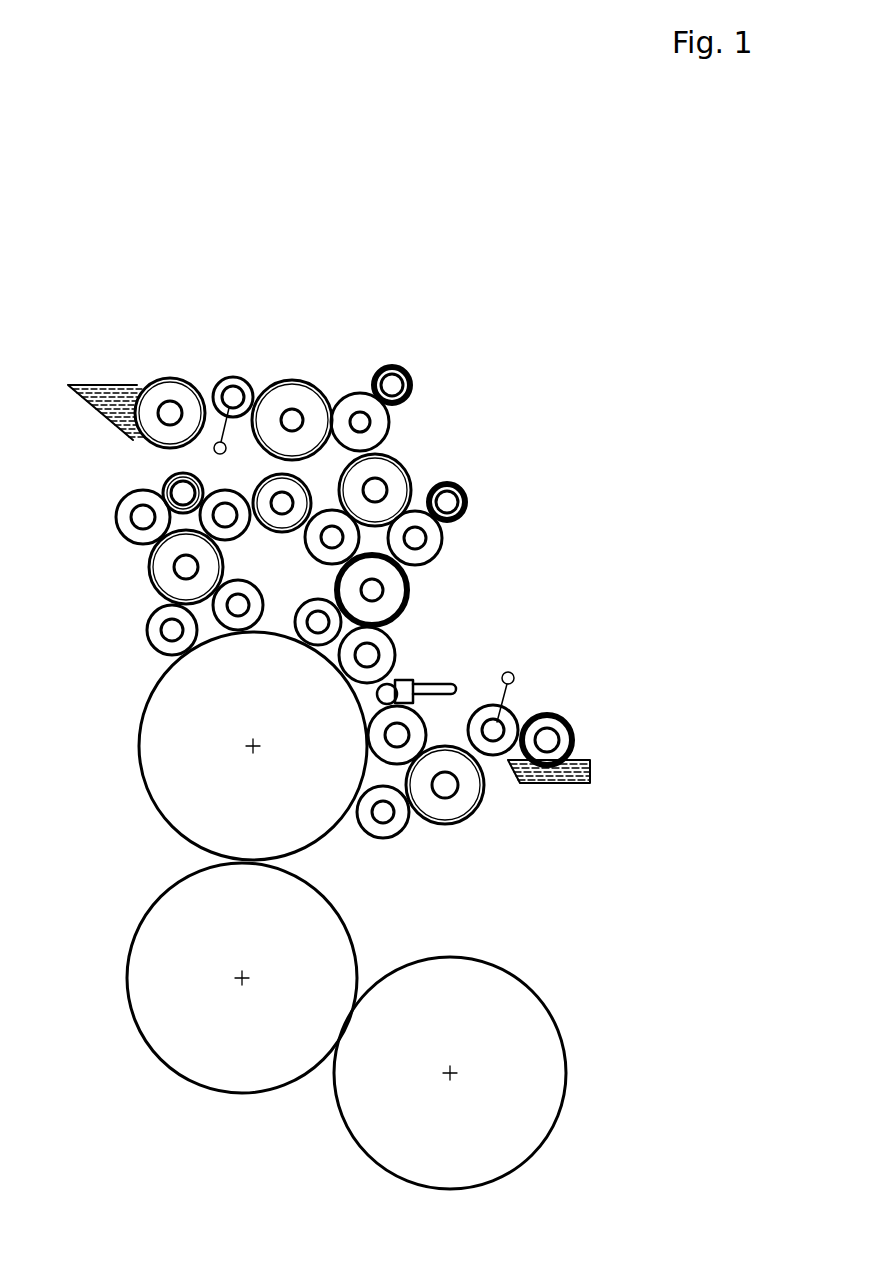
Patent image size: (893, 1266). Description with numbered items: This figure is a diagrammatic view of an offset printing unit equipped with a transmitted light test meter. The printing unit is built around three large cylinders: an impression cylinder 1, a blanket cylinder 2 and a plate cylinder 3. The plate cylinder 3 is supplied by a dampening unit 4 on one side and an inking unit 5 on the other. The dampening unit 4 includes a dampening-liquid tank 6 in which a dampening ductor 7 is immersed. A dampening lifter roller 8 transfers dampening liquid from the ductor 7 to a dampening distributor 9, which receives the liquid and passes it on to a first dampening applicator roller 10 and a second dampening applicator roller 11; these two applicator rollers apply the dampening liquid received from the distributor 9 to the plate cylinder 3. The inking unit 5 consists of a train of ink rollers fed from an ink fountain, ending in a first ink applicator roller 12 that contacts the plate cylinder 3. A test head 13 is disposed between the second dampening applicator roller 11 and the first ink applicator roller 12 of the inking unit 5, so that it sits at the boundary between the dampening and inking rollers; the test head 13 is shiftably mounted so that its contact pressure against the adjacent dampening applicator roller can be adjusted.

The impression cylinder 1 is at (532, 1030).
The blanket cylinder 2 is at (162, 1027).
The plate cylinder 3 is at (172, 783).
The dampening unit 4 is at (512, 761).
The inking unit 5 is at (327, 525).
The dampening-liquid tank 6 is at (517, 818).
The dampening ductor 7 is at (562, 743).
The dampening lifter roller 8 is at (503, 717).
The dampening distributor 9 is at (448, 807).
The first dampening applicator roller 10 is at (392, 828).
The second dampening applicator roller 11 is at (415, 743).
The first ink applicator roller 12 is at (383, 660).
The test head 13 is at (413, 690).